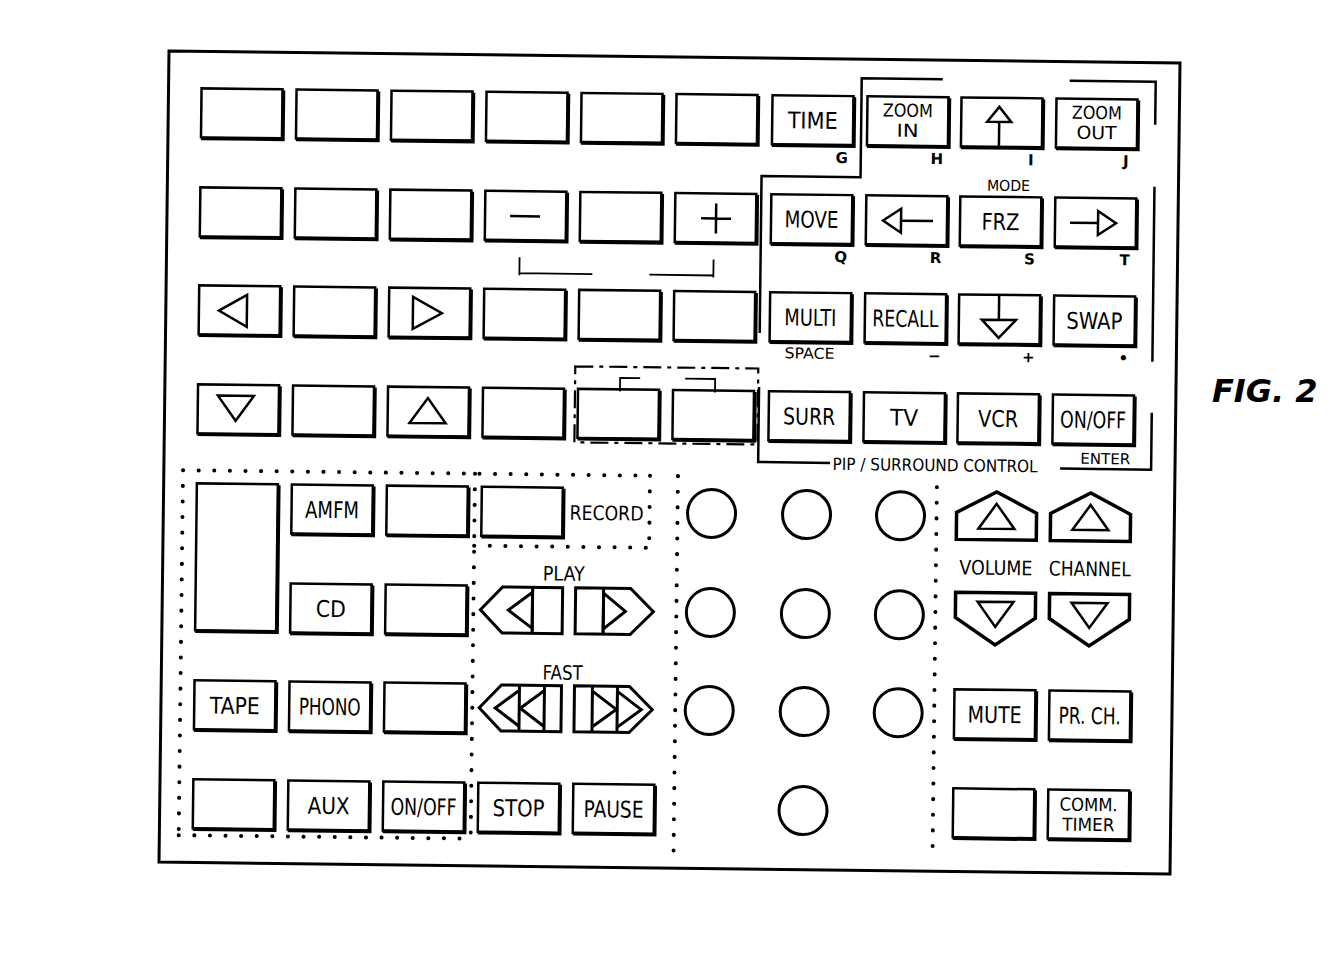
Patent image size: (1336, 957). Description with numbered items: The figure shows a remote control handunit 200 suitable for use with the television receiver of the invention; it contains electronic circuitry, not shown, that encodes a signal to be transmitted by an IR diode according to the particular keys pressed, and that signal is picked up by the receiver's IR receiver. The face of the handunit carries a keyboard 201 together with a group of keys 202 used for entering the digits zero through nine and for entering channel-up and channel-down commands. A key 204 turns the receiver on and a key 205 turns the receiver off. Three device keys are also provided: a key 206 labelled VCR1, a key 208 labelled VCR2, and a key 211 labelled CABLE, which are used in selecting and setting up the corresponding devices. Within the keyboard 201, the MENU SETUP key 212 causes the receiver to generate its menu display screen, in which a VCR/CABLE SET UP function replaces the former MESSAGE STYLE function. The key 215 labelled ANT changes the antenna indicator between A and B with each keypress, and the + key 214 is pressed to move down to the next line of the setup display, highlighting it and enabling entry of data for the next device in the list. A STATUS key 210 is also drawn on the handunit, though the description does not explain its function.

The remote control handunit 200 is at (1177, 604).
The keyboard 201 is at (198, 364).
The keys 202 is at (765, 813).
The key 204 is at (214, 631).
The key 205 is at (214, 778).
The key 206 is at (447, 533).
The key 208 is at (447, 631).
The STATUS key 210 is at (968, 778).
The key 211 is at (452, 730).
The MENU SETUP key 212 is at (745, 282).
The + key 214 is at (742, 186).
The key 215 is at (542, 384).